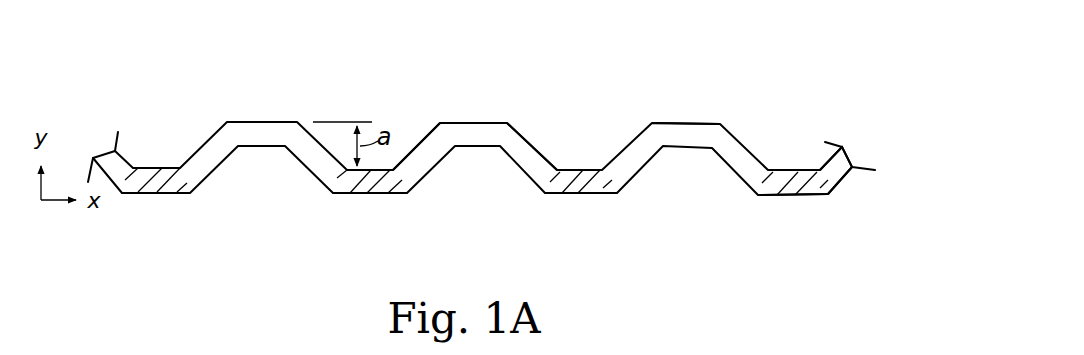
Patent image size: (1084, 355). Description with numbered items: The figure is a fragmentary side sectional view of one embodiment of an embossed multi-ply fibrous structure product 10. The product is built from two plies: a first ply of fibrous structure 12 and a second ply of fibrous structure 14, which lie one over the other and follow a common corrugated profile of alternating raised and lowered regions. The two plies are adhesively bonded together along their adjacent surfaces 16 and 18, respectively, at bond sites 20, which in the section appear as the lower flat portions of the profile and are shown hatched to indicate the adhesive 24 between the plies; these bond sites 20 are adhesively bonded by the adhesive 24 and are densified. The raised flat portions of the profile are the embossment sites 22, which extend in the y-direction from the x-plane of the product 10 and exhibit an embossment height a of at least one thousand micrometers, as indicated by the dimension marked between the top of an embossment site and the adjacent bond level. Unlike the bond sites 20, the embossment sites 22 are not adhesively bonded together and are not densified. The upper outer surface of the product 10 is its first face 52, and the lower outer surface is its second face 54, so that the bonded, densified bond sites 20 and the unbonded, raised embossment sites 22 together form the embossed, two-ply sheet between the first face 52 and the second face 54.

The embossed multi-ply fibrous structure product 10 is at (878, 56).
The first ply of fibrous structure 12 is at (827, 157).
The second ply of fibrous structure 14 is at (843, 182).
The adjacent surface 16 is at (513, 127).
The adjacent surface 18 is at (425, 170).
The bond sites 20 is at (147, 192).
The embossment sites 22 is at (264, 119).
The adhesive 24 is at (591, 183).
The first face 52 is at (480, 98).
The second face 54 is at (366, 210).